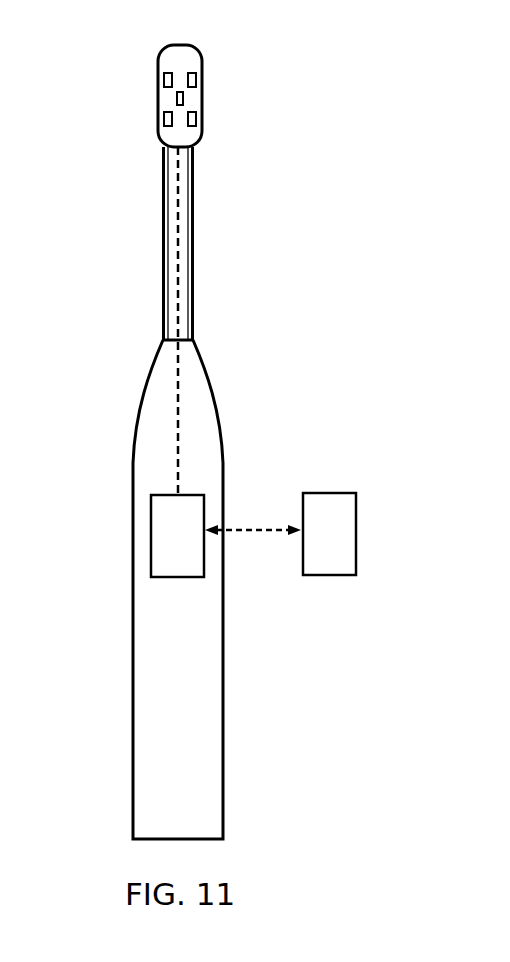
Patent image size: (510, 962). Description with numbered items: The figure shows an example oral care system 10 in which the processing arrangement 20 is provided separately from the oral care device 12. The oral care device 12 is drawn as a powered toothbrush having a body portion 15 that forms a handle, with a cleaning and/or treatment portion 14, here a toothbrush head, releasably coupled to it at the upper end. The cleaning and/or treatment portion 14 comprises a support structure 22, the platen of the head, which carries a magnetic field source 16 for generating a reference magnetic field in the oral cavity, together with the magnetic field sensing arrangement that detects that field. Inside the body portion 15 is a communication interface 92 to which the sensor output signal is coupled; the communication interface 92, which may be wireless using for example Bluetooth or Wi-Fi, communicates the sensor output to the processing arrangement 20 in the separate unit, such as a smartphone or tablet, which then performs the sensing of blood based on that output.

The oral care system 10 is at (277, 596).
The oral care device 12 is at (100, 201).
The cleaning and/or treatment portion 14 is at (226, 37).
The body portion 15 is at (223, 680).
The magnetic field source 16 is at (148, 58).
The processing arrangement 20 is at (333, 493).
The support structure 22 is at (152, 117).
The communication interface 92 is at (204, 495).